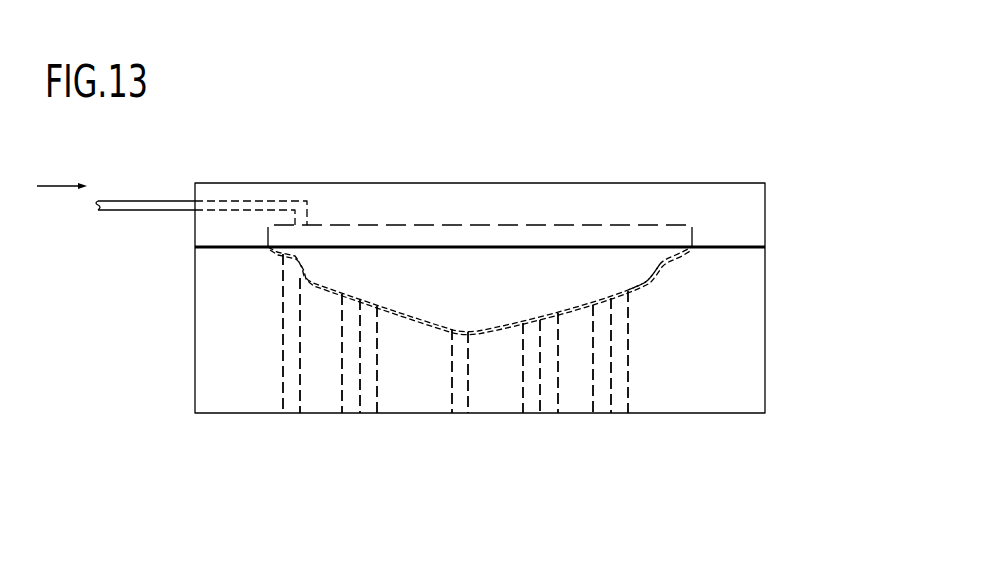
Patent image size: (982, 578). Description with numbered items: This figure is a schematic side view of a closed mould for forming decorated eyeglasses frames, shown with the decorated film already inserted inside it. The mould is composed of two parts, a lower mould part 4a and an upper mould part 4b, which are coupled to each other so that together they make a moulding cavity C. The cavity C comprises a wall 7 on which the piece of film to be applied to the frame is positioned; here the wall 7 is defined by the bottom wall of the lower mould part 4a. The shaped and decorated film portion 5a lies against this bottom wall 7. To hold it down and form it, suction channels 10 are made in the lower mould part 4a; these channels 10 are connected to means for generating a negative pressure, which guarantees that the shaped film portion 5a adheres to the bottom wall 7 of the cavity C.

The lower mould part 4a is at (740, 288).
The upper mould part 4b is at (693, 202).
The shaped and decorated film portion 5a is at (576, 413).
The wall 7 is at (647, 288).
The suction channels 10 is at (377, 399).
The moulding cavity C is at (442, 275).